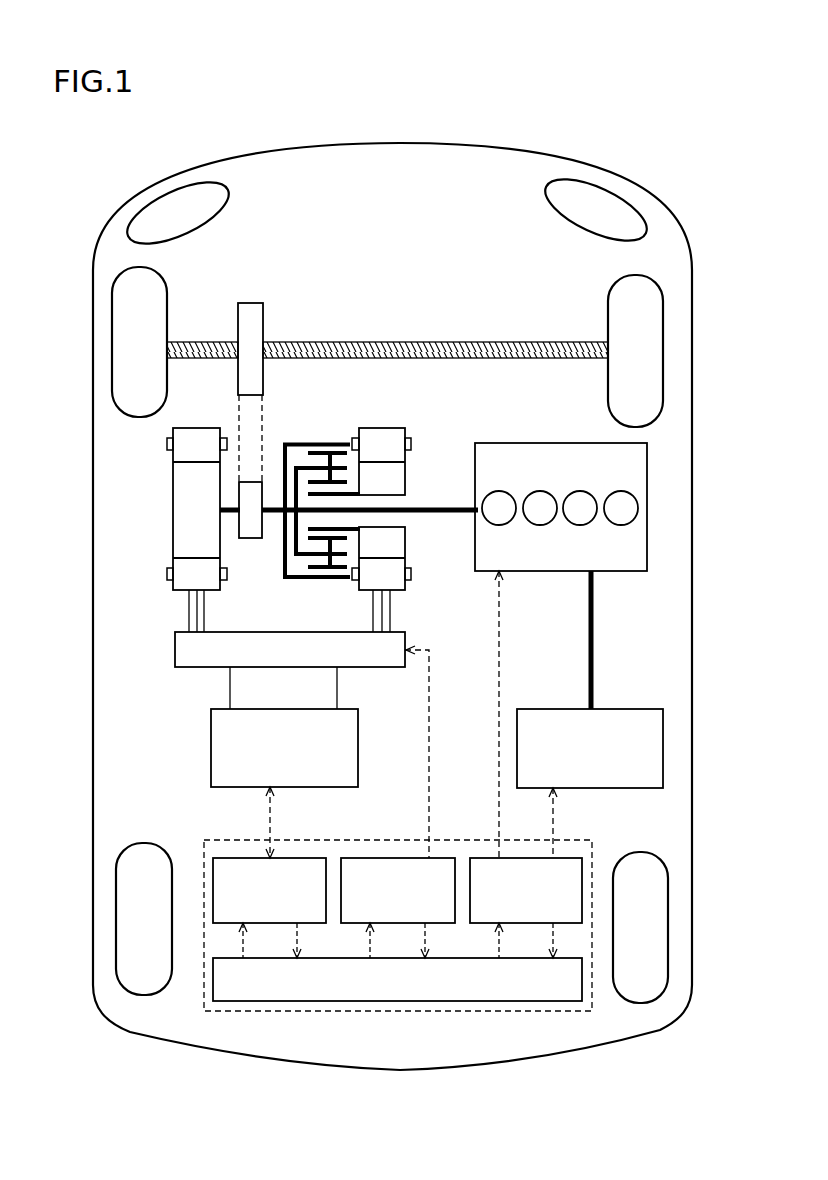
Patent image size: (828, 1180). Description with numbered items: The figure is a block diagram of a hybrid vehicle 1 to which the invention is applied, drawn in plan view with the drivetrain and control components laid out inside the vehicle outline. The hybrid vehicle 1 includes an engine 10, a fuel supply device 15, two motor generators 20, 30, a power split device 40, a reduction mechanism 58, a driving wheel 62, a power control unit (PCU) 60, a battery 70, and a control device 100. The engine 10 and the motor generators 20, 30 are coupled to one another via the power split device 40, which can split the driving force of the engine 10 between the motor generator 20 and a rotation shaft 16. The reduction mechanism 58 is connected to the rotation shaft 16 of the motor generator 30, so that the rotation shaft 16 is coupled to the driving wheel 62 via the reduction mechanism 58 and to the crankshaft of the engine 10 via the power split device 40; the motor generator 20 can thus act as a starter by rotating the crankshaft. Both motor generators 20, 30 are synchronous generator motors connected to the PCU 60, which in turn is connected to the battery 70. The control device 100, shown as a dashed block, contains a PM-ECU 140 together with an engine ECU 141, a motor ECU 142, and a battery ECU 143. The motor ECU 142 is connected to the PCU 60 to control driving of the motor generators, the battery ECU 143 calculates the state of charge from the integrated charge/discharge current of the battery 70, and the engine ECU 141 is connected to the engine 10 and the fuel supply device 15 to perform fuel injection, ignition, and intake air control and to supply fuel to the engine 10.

The hybrid vehicle 1 is at (402, 115).
The engine 10 is at (498, 443).
The fuel supply device 15 is at (645, 709).
The rotation shaft 16 is at (273, 516).
The motor generator 20 is at (383, 428).
The motor generator 30 is at (197, 428).
The power split device 40 is at (327, 427).
The reduction mechanism 58 is at (247, 303).
The power control unit (PCU) 60 is at (175, 649).
The driving wheel 62 is at (621, 277).
The battery 70 is at (211, 751).
The control device 100 is at (480, 1011).
The PM-ECU 140 is at (270, 1001).
The engine ECU 141 is at (567, 858).
The motor ECU 142 is at (358, 858).
The battery ECU 143 is at (230, 858).